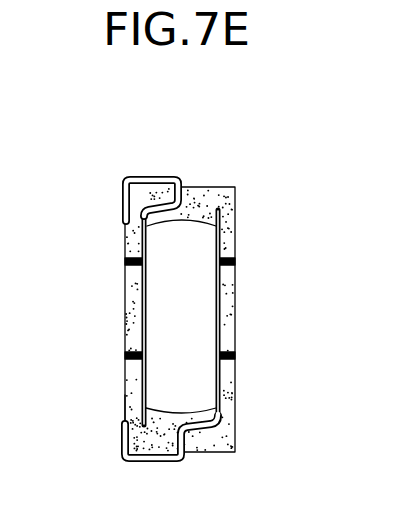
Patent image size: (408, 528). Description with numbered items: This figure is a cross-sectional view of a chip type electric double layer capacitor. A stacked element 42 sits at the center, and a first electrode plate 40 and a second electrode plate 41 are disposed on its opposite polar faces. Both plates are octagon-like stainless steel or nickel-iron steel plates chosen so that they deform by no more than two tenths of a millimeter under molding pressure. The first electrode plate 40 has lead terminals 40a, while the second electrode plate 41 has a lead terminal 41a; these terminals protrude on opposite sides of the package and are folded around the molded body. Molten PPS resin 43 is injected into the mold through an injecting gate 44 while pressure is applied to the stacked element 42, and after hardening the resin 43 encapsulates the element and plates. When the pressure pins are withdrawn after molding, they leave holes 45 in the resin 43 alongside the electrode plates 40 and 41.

The first electrode plate 40 is at (135, 398).
The lead terminals 40a is at (150, 177).
The second electrode plate 41 is at (217, 393).
The lead terminal 41a is at (175, 460).
The stacked element 42 is at (188, 232).
The PPS resin 43 is at (223, 190).
The injecting gate 44 is at (130, 307).
The holes 45 is at (130, 271).